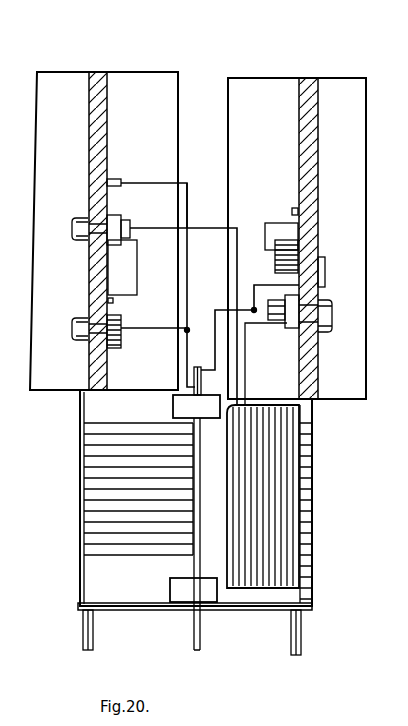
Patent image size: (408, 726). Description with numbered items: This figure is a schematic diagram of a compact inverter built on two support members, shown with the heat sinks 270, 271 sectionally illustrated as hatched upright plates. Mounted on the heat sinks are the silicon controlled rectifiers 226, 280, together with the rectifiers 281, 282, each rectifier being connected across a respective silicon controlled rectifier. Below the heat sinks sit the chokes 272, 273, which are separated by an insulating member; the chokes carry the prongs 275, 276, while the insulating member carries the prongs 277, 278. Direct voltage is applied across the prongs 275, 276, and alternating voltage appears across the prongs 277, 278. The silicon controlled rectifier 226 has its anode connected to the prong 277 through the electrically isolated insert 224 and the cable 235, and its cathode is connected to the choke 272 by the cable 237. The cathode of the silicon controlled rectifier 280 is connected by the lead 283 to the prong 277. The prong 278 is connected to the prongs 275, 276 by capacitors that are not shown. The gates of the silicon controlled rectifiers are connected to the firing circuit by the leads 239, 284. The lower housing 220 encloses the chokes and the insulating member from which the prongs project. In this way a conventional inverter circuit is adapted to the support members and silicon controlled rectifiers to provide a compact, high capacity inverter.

The housing 220 is at (82, 392).
The insert 224 is at (90, 181).
The silicon controlled rectifier 226 is at (126, 222).
The cable 235 is at (190, 176).
The cable 237 is at (137, 272).
The lead 239 is at (205, 226).
The heat sink 270 is at (88, 70).
The heat sink 271 is at (365, 74).
The choke 272 is at (82, 523).
The choke 273 is at (313, 516).
The prong 275 is at (80, 623).
The prong 276 is at (302, 628).
The prong 277 is at (190, 566).
The prong 278 is at (190, 646).
The silicon controlled rectifier 280 is at (291, 331).
The rectifier 281 is at (122, 346).
The rectifier 282 is at (273, 260).
The lead 283 is at (208, 307).
The lead 284 is at (242, 380).